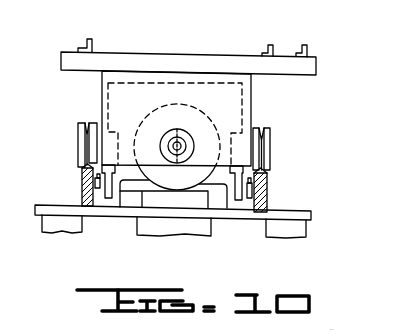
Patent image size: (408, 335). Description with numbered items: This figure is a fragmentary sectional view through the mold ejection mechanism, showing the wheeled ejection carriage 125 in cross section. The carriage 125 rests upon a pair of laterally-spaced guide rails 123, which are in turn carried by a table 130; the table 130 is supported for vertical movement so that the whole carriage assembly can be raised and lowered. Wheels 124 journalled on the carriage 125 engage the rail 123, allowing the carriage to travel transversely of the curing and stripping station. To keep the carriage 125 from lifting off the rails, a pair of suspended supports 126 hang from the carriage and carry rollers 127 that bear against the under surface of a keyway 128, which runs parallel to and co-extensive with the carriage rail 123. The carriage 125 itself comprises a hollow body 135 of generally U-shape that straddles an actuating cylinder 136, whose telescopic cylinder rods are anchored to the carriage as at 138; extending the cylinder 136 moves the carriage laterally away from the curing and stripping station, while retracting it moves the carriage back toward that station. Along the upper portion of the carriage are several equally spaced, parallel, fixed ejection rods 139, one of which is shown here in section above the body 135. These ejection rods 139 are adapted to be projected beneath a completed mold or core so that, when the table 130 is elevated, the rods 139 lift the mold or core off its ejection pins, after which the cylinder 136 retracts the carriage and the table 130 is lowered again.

The guide rails 123 is at (268, 197).
The wheels 124 is at (79, 143).
The wheeled ejection carriage 125 is at (257, 107).
The suspended supports 126 is at (108, 194).
The rollers 127 is at (249, 200).
The keyway 128 is at (262, 180).
The table 130 is at (97, 211).
The hollow body 135 is at (143, 90).
The actuating cylinder 136 is at (194, 98).
The anchor of cylinder rods 138 is at (182, 136).
The ejection rods 139 is at (308, 50).